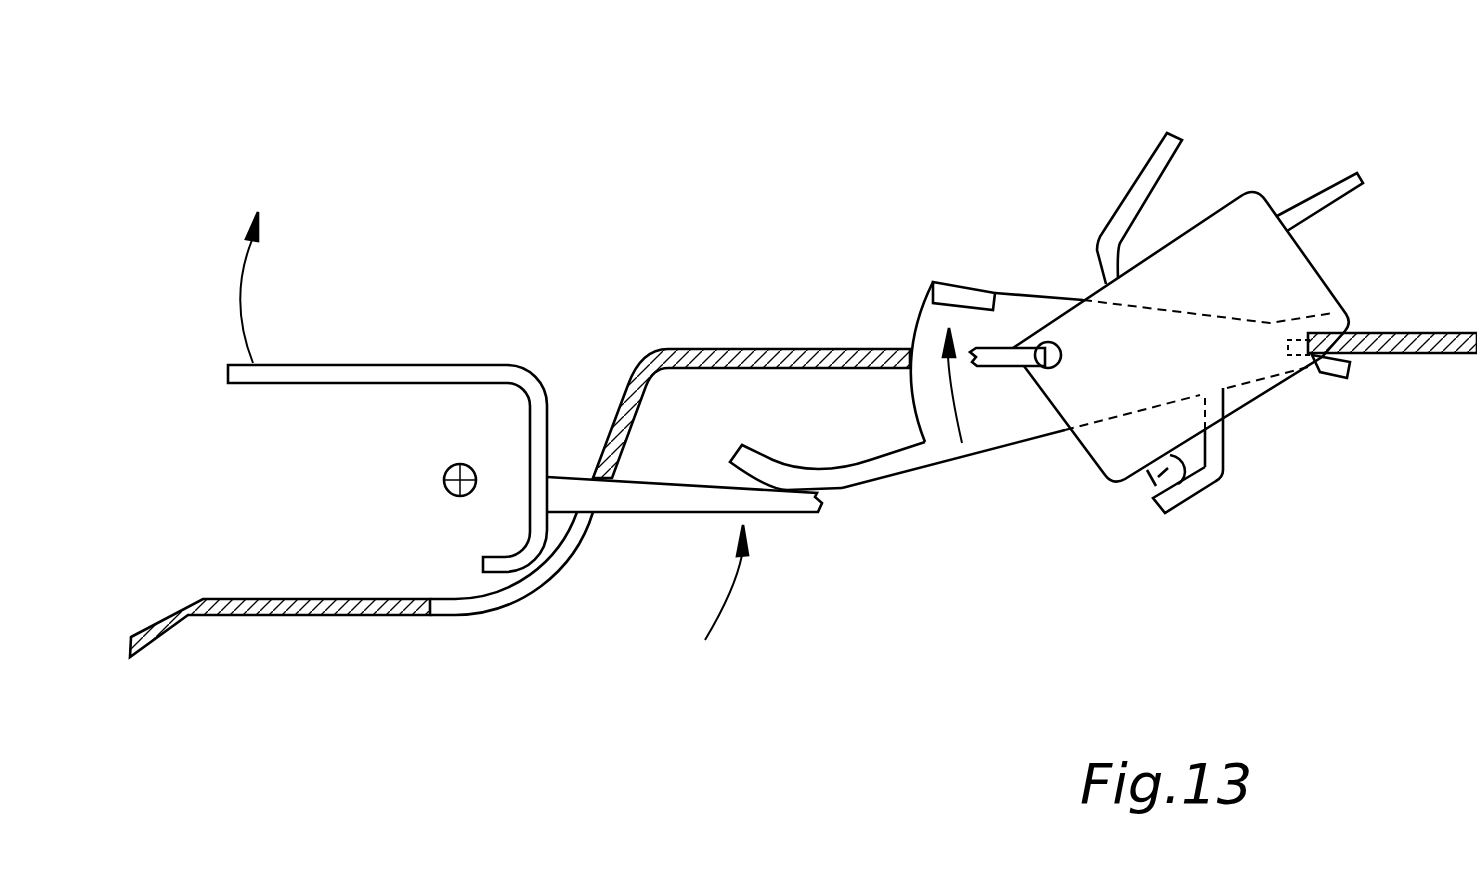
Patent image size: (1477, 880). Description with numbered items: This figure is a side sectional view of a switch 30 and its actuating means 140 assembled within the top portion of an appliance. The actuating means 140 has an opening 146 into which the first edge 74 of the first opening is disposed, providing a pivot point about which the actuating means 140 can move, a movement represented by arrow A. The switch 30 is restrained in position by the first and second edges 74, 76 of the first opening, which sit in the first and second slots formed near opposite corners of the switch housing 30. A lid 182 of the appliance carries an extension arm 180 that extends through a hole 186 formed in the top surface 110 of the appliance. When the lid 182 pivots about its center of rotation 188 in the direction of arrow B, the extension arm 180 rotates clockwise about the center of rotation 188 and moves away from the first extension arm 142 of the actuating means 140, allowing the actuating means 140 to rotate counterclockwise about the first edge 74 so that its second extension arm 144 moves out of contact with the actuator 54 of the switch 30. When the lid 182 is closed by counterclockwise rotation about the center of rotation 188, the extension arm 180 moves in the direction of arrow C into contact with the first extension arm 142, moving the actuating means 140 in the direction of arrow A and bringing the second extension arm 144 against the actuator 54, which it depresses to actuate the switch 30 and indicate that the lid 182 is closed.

The switch 30 is at (1253, 232).
The actuator 54 is at (1148, 487).
The first edge 74 is at (1340, 330).
The second edge 76 is at (1048, 343).
The panel 110 is at (727, 349).
The actuating means 140 is at (977, 427).
The first extension arm 142 is at (838, 484).
The second extension arm 144 is at (1187, 490).
The opening 146 is at (1310, 373).
The extension arm 180 is at (620, 498).
The lid 182 is at (337, 373).
The hole 186 is at (473, 607).
The center of rotation 188 is at (458, 463).
The arrow A is at (912, 343).
The arrow B is at (238, 288).
The arrow C is at (723, 610).